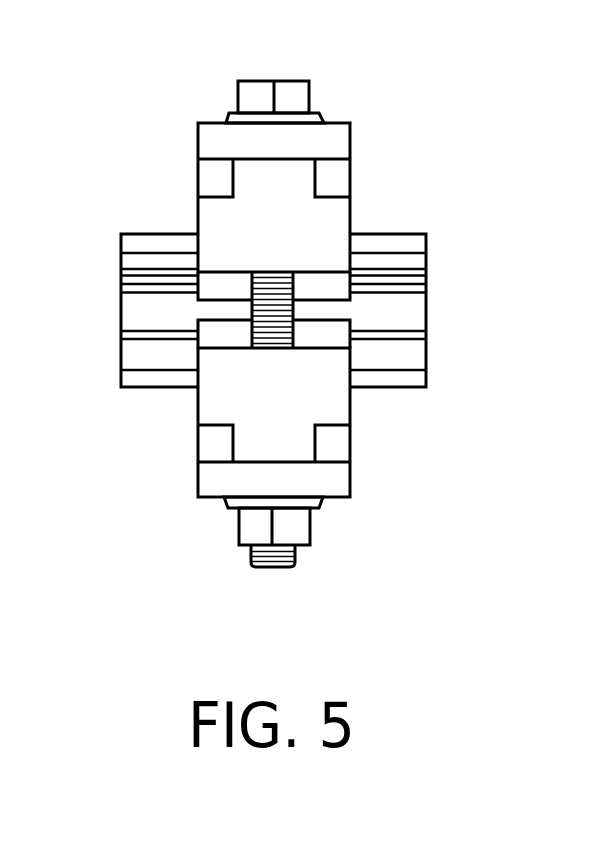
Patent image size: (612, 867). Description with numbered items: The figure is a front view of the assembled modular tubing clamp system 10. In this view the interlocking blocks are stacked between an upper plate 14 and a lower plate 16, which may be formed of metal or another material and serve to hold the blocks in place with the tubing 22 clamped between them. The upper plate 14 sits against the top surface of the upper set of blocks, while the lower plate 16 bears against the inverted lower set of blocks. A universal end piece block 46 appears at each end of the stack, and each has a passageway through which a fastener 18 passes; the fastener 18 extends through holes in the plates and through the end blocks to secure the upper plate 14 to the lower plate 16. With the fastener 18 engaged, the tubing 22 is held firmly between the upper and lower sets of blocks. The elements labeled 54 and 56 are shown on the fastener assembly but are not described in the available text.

The modular tubing clamp system 10 is at (356, 80).
The upper plate 14 is at (198, 137).
The lower plate 16 is at (198, 478).
The fastener 18 is at (270, 80).
The tubing 22 is at (135, 302).
The universal end piece block 46 is at (338, 213).
The threaded stud 54 is at (258, 310).
The lower nut 56 is at (295, 530).